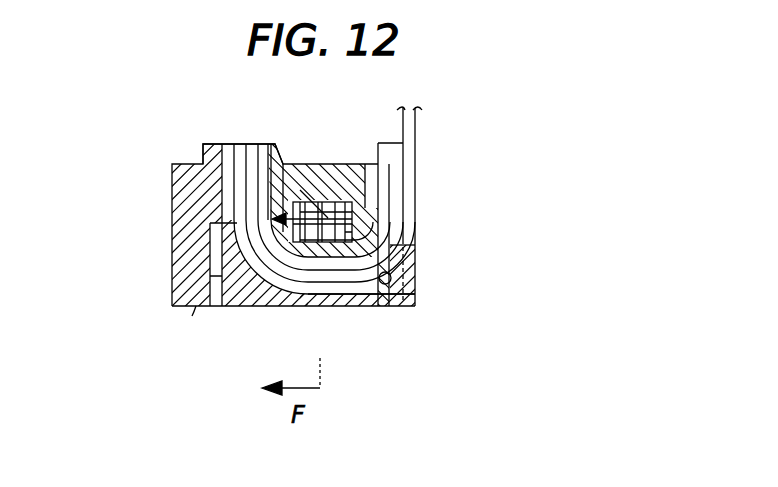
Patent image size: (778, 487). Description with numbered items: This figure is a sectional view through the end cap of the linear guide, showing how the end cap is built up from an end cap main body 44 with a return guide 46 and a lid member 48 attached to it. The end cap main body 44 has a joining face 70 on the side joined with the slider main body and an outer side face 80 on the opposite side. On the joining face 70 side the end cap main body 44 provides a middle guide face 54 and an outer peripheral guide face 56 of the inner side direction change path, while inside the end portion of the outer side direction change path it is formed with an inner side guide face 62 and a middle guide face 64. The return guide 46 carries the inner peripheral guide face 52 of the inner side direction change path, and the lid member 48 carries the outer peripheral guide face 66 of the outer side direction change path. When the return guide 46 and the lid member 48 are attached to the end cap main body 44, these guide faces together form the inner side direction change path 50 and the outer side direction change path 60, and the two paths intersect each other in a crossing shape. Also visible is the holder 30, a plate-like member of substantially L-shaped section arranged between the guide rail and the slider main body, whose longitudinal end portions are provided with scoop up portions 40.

The holder 30 is at (418, 123).
The scoop up portion 40 is at (417, 292).
The end cap main body 44 is at (172, 183).
The return guide 46 is at (330, 163).
The lid member 48 is at (290, 306).
The inner side direction change path 50 is at (502, 150).
The inner peripheral guide face of the inner side direction change path 52 is at (340, 205).
The middle guide face of the inner side direction change path 54 is at (336, 215).
The outer peripheral guide face of the inner side direction change path 56 is at (330, 240).
The outer side direction change path 60 is at (95, 217).
The inner side guide face of the outer side direction change path 62 is at (233, 227).
The middle guide face of the outer side direction change path 64 is at (228, 262).
The outer peripheral guide face of the outer side direction change path 66 is at (222, 274).
The joining face 70 is at (203, 152).
The outer side face 80 is at (196, 310).